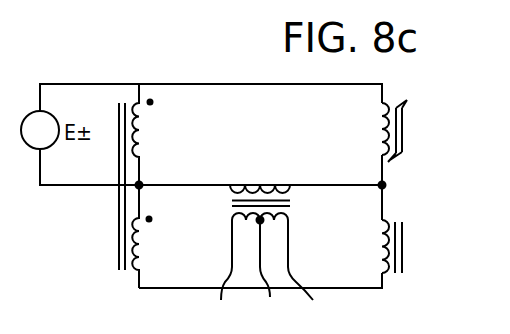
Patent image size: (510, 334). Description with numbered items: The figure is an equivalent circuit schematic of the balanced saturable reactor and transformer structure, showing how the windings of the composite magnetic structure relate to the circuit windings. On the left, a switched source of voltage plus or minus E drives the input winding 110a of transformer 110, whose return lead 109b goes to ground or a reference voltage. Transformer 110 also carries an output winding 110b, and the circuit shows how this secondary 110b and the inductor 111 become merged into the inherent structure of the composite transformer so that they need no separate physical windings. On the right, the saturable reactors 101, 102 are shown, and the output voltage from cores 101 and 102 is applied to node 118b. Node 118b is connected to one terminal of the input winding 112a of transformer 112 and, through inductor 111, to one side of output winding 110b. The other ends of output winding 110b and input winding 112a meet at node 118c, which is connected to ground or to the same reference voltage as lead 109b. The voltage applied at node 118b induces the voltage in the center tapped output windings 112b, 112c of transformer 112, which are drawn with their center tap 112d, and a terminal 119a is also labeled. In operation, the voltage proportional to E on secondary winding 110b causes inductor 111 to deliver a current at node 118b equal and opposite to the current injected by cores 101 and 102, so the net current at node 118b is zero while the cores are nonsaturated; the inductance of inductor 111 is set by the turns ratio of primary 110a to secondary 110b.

The transformer 110 is at (117, 195).
The input winding 110a is at (142, 127).
The output winding 110b is at (143, 246).
The lead 109b is at (140, 183).
The node 118c is at (141, 187).
The conductor 119a is at (141, 206).
The transformer 112 is at (306, 202).
The input winding 112a is at (277, 187).
The output winding 112b is at (234, 269).
The output winding 112c is at (316, 272).
The secondary winding center tap 112d is at (261, 271).
The saturable magnetic core 101 is at (421, 128).
The saturable magnetic core 102 is at (442, 133).
The node 118b is at (383, 185).
The inductor 111 is at (404, 247).